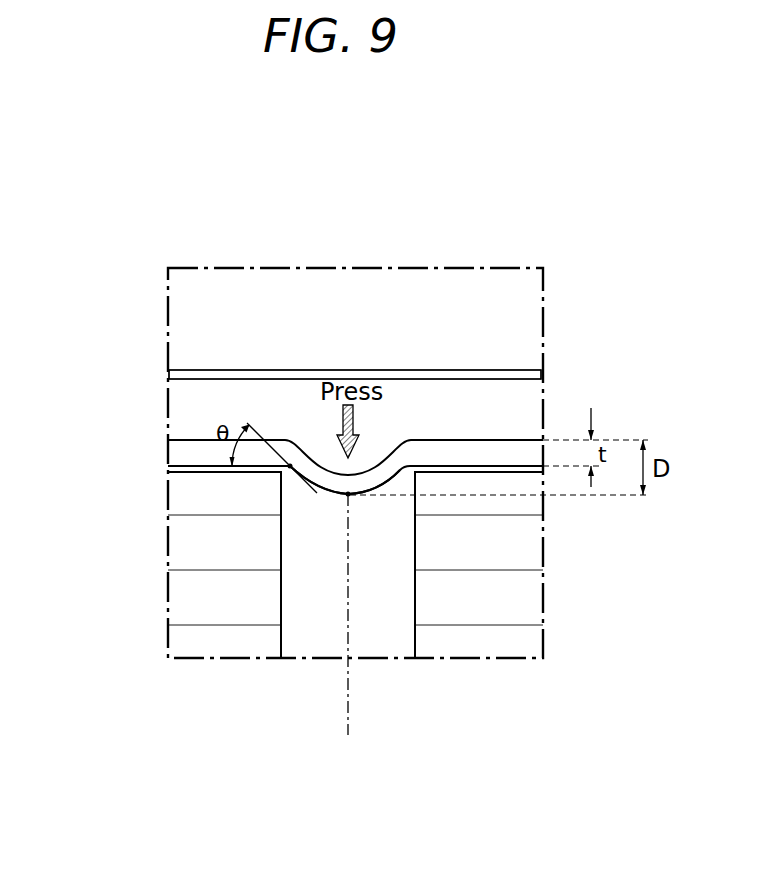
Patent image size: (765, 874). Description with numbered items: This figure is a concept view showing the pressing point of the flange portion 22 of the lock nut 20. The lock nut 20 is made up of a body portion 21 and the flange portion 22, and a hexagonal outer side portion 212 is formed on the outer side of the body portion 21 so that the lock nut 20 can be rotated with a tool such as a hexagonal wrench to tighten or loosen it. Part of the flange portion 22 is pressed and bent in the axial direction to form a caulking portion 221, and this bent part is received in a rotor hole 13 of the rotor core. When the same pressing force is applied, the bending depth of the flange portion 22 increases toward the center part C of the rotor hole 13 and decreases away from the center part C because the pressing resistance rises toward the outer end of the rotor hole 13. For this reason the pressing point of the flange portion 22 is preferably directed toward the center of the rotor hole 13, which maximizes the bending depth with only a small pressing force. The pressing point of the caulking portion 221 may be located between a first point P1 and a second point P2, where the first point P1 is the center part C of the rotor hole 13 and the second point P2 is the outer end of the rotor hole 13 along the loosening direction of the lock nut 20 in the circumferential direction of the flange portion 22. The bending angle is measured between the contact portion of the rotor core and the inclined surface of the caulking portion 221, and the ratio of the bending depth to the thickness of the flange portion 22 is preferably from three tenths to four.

The lock nut 20 is at (446, 358).
The body portion 21 is at (486, 370).
The hexagonal outer side portion 212 is at (182, 410).
The flange portion 22 is at (178, 452).
The caulking portion 221 is at (370, 480).
The rotor hole 13 is at (309, 594).
The first point P1 is at (348, 494).
The second point P2 is at (290, 466).
The center part C is at (348, 717).